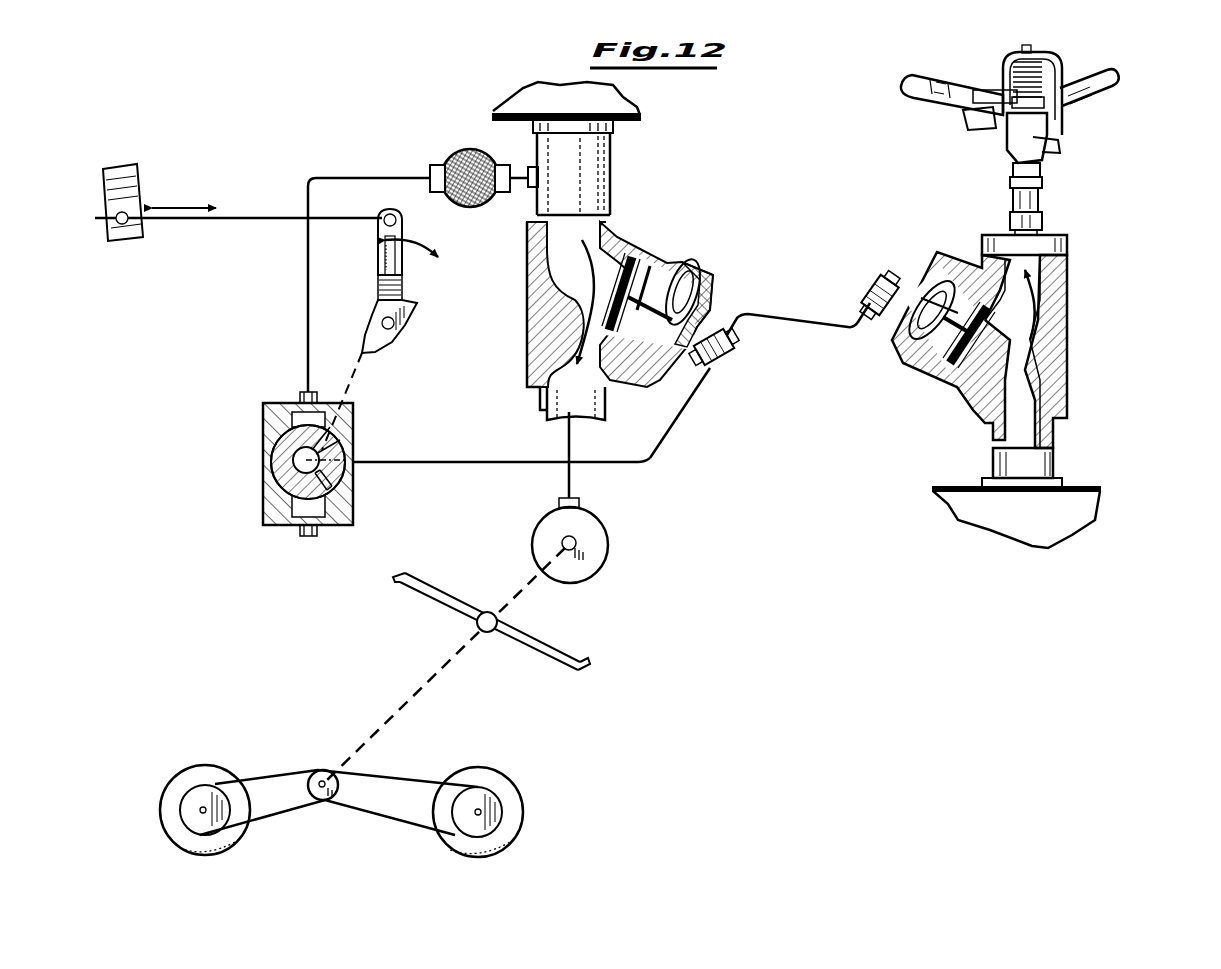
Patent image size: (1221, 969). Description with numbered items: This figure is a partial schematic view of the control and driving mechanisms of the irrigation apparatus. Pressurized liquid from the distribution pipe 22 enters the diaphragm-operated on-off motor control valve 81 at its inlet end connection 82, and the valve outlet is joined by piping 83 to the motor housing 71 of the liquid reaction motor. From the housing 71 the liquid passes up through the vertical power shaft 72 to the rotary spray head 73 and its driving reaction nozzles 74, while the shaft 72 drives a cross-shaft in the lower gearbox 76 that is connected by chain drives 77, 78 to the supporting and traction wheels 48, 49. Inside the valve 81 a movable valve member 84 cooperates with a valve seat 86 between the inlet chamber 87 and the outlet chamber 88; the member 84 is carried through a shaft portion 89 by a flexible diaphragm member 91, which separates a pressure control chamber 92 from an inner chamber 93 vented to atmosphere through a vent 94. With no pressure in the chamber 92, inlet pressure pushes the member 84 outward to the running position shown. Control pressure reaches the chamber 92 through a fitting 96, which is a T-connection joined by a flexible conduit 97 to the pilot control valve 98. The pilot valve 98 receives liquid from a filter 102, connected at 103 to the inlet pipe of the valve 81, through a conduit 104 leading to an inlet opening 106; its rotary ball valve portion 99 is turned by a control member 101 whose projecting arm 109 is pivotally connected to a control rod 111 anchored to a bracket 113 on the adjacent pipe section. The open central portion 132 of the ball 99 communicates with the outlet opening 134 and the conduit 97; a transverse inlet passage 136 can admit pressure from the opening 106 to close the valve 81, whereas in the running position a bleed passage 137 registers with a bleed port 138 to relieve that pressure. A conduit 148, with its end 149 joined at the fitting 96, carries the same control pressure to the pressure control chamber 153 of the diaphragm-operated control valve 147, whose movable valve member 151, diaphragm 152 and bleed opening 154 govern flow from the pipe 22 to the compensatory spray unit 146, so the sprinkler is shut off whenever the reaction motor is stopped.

The distribution pipe 22 is at (540, 84).
The supporting wheel 48 is at (490, 773).
The supporting wheel 49 is at (165, 790).
The motor housing 71 is at (604, 526).
The vertical power shaft 72 is at (430, 680).
The rotary spray head 73 is at (530, 645).
The reaction nozzles 74 is at (583, 671).
The gearbox 76 is at (320, 768).
The chain drive 77 is at (385, 778).
The chain drive 78 is at (270, 818).
The motor control valve 81 is at (666, 206).
The inlet end connection 82 is at (608, 145).
The piping 83 is at (571, 444).
The movable valve member 84 is at (640, 275).
The valve seat 86 is at (529, 284).
The valve inlet chamber 87 is at (540, 237).
The outlet chamber 88 is at (547, 402).
The shaft portion 89 is at (700, 289).
The flexible diaphragm member 91 is at (705, 299).
The pressure control chamber 92 is at (688, 387).
The inner chamber 93 is at (625, 380).
The vent 94 is at (690, 261).
The fitting 96 is at (730, 352).
The flexible conduit 97 is at (488, 460).
The pilot control valve 98 is at (238, 433).
The rotary inner ball valve portion 99 is at (290, 484).
The control member 101 is at (408, 316).
The filter 102 is at (447, 155).
The filter connection 103 is at (514, 168).
The conduit 104 is at (355, 176).
The inlet opening 106 is at (302, 395).
The projecting arm 109 is at (402, 222).
The control rod 111 is at (258, 222).
The bracket 113 is at (138, 178).
The open central portion 132 is at (283, 461).
The outlet opening 134 is at (322, 477).
The transverse inlet passage 136 is at (330, 439).
The bleed passage 137 is at (340, 489).
The bleed port 138 is at (305, 536).
The compensatory spray unit 146 is at (1100, 124).
The diaphragm-operated control valve 147 is at (1078, 312).
The conduit 148 is at (780, 316).
The conduit end 149 is at (745, 330).
The movable valve member 151 is at (966, 400).
The diaphragm 152 is at (887, 359).
The pressure control chamber 153 is at (880, 341).
The bleed opening 154 is at (922, 377).